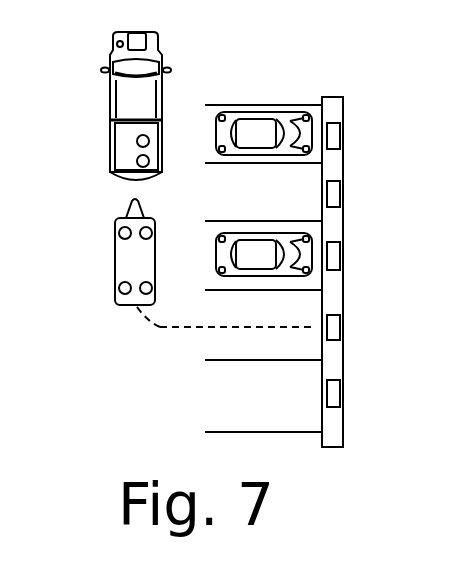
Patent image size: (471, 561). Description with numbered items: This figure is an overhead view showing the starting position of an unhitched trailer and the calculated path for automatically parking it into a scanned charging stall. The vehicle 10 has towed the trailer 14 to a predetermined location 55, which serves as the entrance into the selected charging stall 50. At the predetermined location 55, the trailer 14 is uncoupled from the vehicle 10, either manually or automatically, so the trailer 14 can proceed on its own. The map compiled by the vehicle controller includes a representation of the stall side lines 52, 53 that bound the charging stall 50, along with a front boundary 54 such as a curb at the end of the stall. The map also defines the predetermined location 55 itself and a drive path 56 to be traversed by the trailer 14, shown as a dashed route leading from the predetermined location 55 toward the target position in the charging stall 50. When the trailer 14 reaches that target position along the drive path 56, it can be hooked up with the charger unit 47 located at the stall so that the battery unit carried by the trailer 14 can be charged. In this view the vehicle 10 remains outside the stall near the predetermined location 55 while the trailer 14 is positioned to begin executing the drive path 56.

The vehicle 10 is at (172, 53).
The trailer 14 is at (110, 243).
The charger unit 47 is at (330, 336).
The charging stall 50 is at (222, 343).
The stall side line 52 is at (251, 360).
The stall side line 53 is at (300, 291).
The front boundary 54 is at (318, 347).
The predetermined location 55 is at (133, 308).
The drive path 56 is at (167, 326).